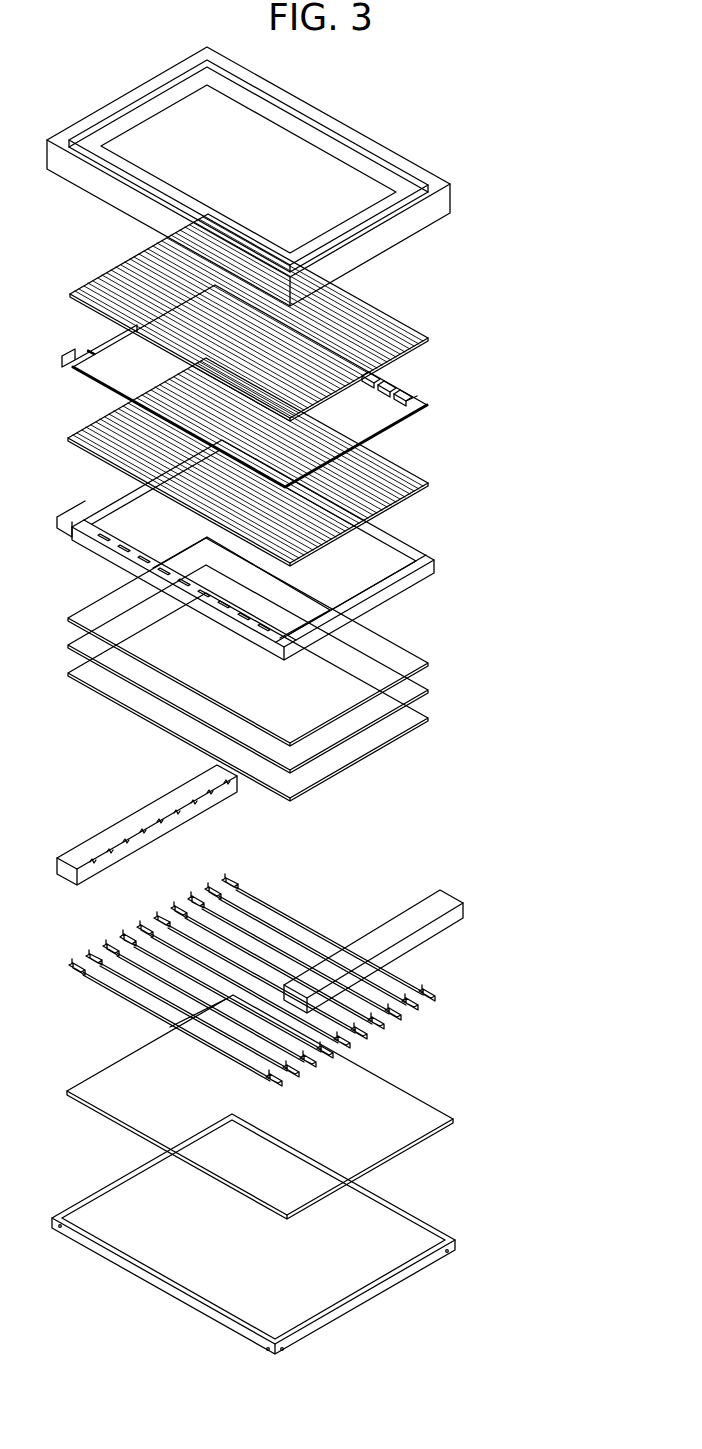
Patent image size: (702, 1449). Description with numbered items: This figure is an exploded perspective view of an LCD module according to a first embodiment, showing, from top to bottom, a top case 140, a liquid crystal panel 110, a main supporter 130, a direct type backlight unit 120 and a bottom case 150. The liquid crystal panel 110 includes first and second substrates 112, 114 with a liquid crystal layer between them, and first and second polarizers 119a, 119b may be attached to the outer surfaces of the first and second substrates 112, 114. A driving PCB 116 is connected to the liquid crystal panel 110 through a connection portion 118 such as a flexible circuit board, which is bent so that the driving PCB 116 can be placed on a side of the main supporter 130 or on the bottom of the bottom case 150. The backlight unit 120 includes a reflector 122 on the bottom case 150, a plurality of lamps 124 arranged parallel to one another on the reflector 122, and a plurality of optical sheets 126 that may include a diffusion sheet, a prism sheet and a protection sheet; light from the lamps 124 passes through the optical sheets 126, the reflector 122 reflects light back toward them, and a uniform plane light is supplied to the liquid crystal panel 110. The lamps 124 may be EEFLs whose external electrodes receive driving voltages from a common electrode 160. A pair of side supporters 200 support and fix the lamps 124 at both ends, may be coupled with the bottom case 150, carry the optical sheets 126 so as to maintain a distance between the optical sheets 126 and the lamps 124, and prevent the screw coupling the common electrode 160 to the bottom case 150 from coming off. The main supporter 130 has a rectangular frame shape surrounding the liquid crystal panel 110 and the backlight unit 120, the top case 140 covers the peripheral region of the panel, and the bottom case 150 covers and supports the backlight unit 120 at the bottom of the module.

The top case 140 is at (450, 199).
The second polarizer 119b is at (383, 310).
The connection portion 118 is at (400, 370).
The driving PCB 116 is at (417, 386).
The second substrate 114 is at (430, 400).
The first substrate 112 is at (407, 410).
The liquid crystal panel 110 is at (329, 386).
The first polarizer 119a is at (418, 478).
The main supporter 130 is at (433, 558).
The optical sheets 126 is at (445, 661).
The side supporters 200 is at (443, 900).
The lamps 124 is at (285, 964).
The common electrode 160 is at (403, 1036).
The reflector 122 is at (302, 1107).
The direct type backlight unit 120 is at (322, 829).
The bottom case 150 is at (445, 1238).